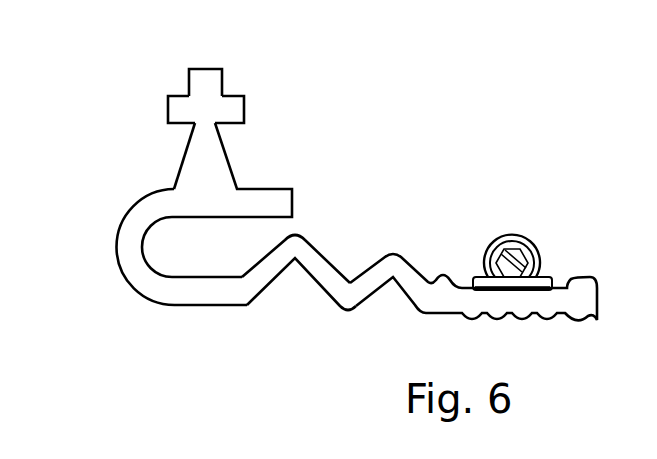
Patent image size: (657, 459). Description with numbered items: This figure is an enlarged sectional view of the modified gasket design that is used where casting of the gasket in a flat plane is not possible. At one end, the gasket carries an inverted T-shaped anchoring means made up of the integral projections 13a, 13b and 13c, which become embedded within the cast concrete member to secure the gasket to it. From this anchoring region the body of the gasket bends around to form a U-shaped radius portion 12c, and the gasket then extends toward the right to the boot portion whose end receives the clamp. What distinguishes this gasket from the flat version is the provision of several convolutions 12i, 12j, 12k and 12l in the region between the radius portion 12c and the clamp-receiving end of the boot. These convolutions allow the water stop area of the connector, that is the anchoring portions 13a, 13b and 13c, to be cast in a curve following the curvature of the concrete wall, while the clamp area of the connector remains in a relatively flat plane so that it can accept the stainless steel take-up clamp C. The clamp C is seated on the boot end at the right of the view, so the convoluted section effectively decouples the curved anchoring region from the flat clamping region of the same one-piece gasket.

The radius portion 12c is at (128, 249).
The convolution 12i is at (243, 295).
The convolution 12j is at (299, 232).
The convolution 12k is at (347, 313).
The convolution 12l is at (394, 254).
The projection 13a is at (168, 110).
The projection 13b is at (245, 110).
The projection 13c is at (202, 69).
The take-down clamp C is at (521, 228).